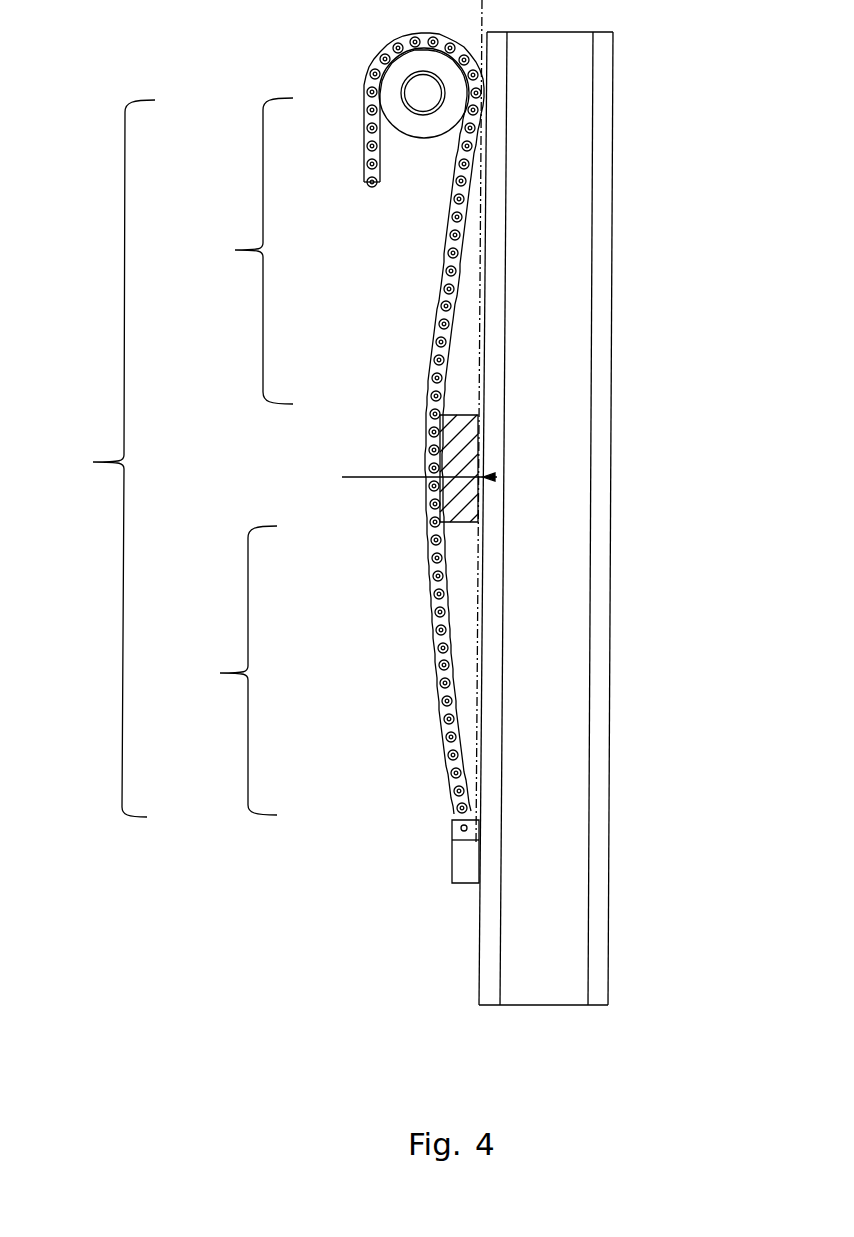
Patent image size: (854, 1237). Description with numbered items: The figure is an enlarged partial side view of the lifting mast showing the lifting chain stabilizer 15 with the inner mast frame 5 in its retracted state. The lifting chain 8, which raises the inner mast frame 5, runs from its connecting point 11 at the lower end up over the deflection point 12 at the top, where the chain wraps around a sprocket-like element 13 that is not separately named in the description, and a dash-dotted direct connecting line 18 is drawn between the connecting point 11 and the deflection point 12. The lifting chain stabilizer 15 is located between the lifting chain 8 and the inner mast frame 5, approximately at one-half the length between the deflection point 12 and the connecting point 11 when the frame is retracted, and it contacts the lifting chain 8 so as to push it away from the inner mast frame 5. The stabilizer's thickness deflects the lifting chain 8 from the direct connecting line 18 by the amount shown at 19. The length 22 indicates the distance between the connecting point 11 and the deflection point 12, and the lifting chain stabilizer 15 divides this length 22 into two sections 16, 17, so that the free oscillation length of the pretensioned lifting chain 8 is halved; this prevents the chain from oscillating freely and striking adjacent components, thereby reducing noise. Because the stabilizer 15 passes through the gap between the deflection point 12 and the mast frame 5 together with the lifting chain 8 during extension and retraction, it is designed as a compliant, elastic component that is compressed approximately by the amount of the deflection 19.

The inner mast frame 5 is at (548, 710).
The lifting chain 8 is at (435, 640).
The connecting point 11 is at (463, 857).
The deflection point 12 is at (425, 98).
The sprocket shaft 13 is at (552, 198).
The lifting chain stabilizer 15 is at (465, 503).
The section 16 is at (239, 251).
The section 17 is at (222, 670).
The direct connecting line 18 is at (480, 307).
The deflection 19 is at (380, 478).
The length 22 is at (88, 458).